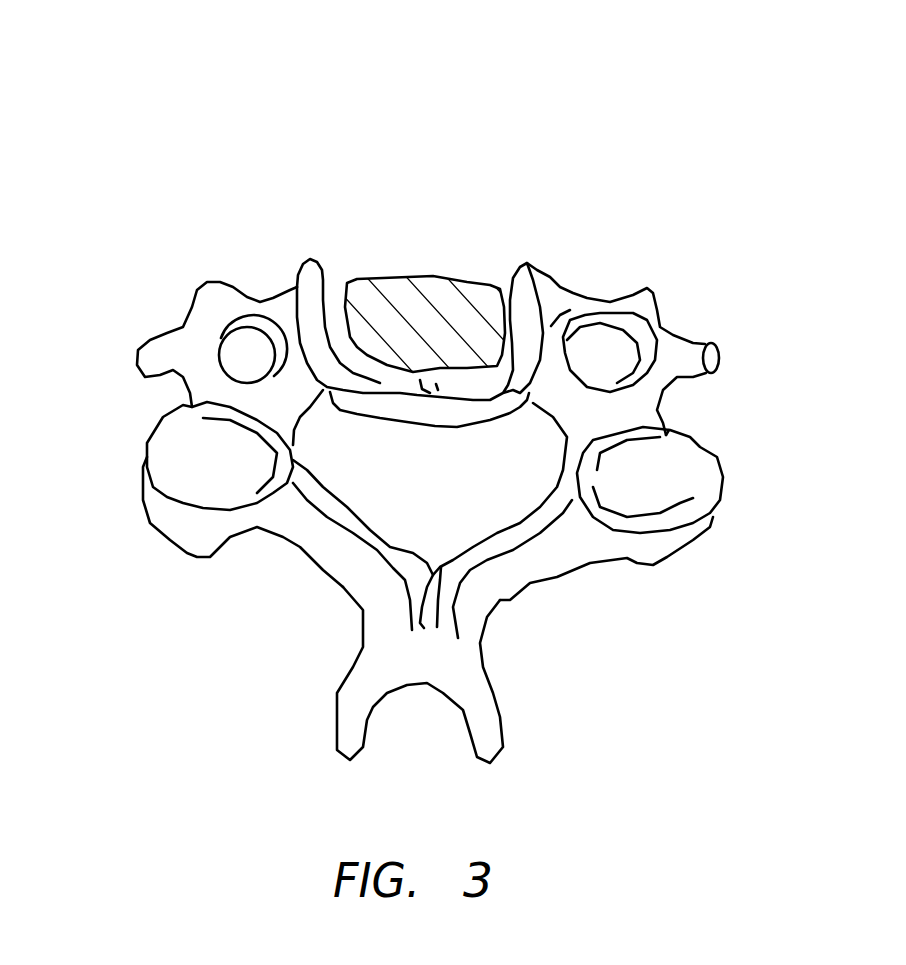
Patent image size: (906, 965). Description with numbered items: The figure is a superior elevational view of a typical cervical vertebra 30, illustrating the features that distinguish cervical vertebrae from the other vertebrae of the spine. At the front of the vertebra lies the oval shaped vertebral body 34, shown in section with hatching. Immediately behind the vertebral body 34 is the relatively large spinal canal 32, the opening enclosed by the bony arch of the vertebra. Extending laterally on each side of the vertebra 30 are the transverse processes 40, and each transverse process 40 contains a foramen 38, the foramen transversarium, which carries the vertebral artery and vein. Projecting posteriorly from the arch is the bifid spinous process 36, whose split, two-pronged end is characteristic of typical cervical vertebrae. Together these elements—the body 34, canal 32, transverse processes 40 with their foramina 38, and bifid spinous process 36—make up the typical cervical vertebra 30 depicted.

The cervical vertebra 30 is at (450, 106).
The spinal canal 32 is at (470, 512).
The vertebral body 34 is at (428, 320).
The bifid spinous process 36 is at (420, 658).
The foramen transversarium 38 is at (245, 350).
The transverse process 40 is at (155, 328).